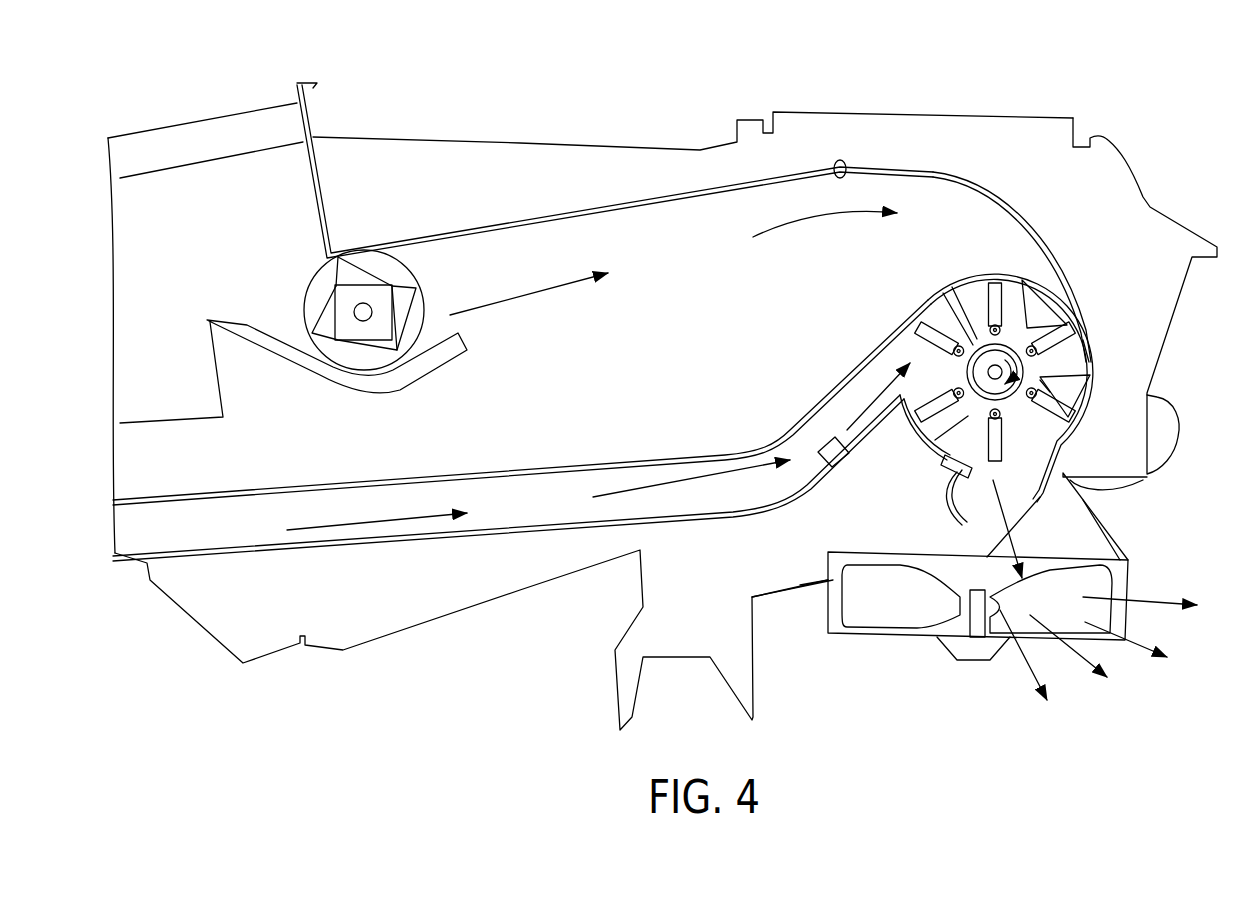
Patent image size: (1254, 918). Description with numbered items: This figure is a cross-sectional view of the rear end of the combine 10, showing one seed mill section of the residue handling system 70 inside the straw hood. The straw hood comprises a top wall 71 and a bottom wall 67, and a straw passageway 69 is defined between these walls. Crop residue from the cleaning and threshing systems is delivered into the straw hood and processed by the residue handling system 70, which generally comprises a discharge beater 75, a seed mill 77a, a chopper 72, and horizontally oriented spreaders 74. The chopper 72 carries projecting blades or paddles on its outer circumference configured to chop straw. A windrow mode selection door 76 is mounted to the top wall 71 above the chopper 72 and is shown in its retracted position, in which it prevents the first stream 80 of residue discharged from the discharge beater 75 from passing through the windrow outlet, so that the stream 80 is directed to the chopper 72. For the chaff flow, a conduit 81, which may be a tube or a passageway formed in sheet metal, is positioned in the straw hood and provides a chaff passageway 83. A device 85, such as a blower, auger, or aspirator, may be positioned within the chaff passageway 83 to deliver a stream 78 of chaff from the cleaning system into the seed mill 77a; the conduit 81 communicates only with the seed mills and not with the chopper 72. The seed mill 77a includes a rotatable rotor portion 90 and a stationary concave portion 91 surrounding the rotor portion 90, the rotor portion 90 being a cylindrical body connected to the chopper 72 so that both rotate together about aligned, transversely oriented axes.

The combine 10 is at (1138, 136).
The bottom wall 67 is at (533, 532).
The straw passageway 69 is at (676, 420).
The residue handling system 70 is at (497, 116).
The top wall 71 is at (597, 206).
The chopper 72 is at (972, 298).
The spreaders 74 is at (1135, 524).
The discharge beater 75 is at (307, 297).
The windrow mode selection door 76 is at (1030, 215).
The seed mill 77a is at (1042, 290).
The stream of chaff 78 is at (630, 493).
The first stream of residue 80 is at (520, 297).
The conduit 81 is at (273, 483).
The chaff passageway 83 is at (185, 533).
The device 85 is at (842, 466).
The rotor portion 90 is at (1045, 385).
The concave portion 91 is at (1085, 352).